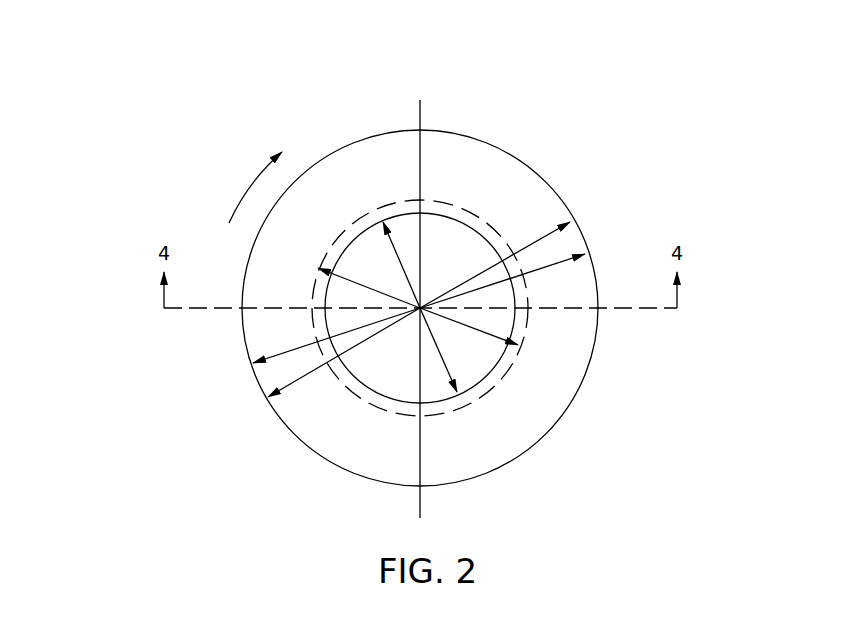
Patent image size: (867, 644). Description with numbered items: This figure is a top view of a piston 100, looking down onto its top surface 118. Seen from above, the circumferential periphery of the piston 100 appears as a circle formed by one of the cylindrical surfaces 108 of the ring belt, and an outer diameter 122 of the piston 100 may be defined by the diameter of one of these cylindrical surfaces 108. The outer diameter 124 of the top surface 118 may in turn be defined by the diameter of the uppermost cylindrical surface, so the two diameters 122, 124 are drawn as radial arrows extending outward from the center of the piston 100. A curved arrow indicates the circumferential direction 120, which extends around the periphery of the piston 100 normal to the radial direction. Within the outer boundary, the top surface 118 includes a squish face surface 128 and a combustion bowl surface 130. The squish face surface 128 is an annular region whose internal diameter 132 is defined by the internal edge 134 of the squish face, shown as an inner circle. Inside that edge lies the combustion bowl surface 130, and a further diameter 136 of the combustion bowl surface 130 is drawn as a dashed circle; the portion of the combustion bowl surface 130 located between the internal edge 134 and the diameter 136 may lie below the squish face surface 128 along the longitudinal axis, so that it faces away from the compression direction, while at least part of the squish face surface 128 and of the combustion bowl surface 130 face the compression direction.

The piston 100 is at (666, 84).
The cylindrical surfaces 108 is at (553, 186).
The top surface 118 is at (388, 371).
The circumferential direction 120 is at (252, 185).
The outer diameter 122 is at (308, 380).
The outer diameter of the top surface 124 is at (294, 357).
The squish face surface 128 is at (467, 165).
The combustion bowl surface 130 is at (458, 255).
The internal diameter of the squish face 132 is at (440, 350).
The internal edge of the squish face 134 is at (496, 368).
The diameter of the combustion bowl surface 136 is at (512, 337).